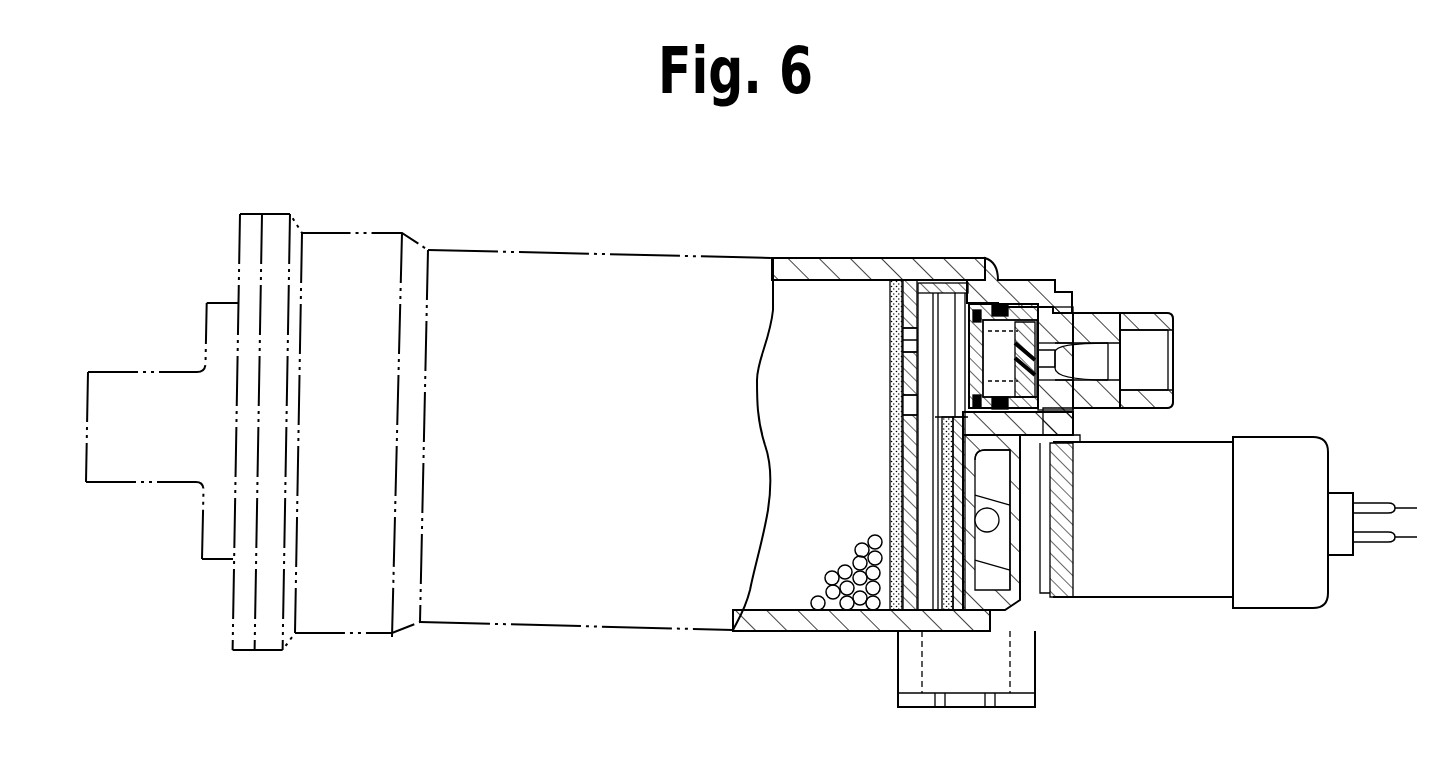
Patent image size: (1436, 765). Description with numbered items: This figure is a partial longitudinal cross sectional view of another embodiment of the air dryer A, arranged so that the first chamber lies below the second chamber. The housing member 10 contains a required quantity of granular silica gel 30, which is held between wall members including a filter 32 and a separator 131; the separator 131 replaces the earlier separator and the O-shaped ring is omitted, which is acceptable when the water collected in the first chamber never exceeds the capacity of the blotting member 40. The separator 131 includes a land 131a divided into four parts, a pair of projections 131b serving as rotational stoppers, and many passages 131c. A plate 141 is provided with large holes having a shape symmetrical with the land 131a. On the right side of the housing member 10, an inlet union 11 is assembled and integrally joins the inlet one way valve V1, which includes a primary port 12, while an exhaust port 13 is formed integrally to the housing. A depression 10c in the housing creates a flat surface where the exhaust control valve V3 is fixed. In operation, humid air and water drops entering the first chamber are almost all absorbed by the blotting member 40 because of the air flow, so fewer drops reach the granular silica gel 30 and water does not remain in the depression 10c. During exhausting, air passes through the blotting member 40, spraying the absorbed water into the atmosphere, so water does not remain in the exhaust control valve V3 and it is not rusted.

The air dryer A is at (611, 236).
The housing member 10 is at (770, 620).
The depression 10c is at (983, 475).
The inlet union 11 is at (1160, 318).
The primary port 12 is at (1088, 348).
The exhaust port 13 is at (990, 592).
The granular silica gel 30 is at (835, 617).
The filter 32 is at (897, 283).
The blotting member 40 is at (948, 605).
The separator 131 is at (910, 283).
The land 131a is at (905, 450).
The projections 131b is at (937, 283).
The passages 131c is at (908, 340).
The plate 141 is at (900, 637).
The inlet one way valve V1 is at (1020, 316).
The exhaust control valve V3 is at (1192, 452).